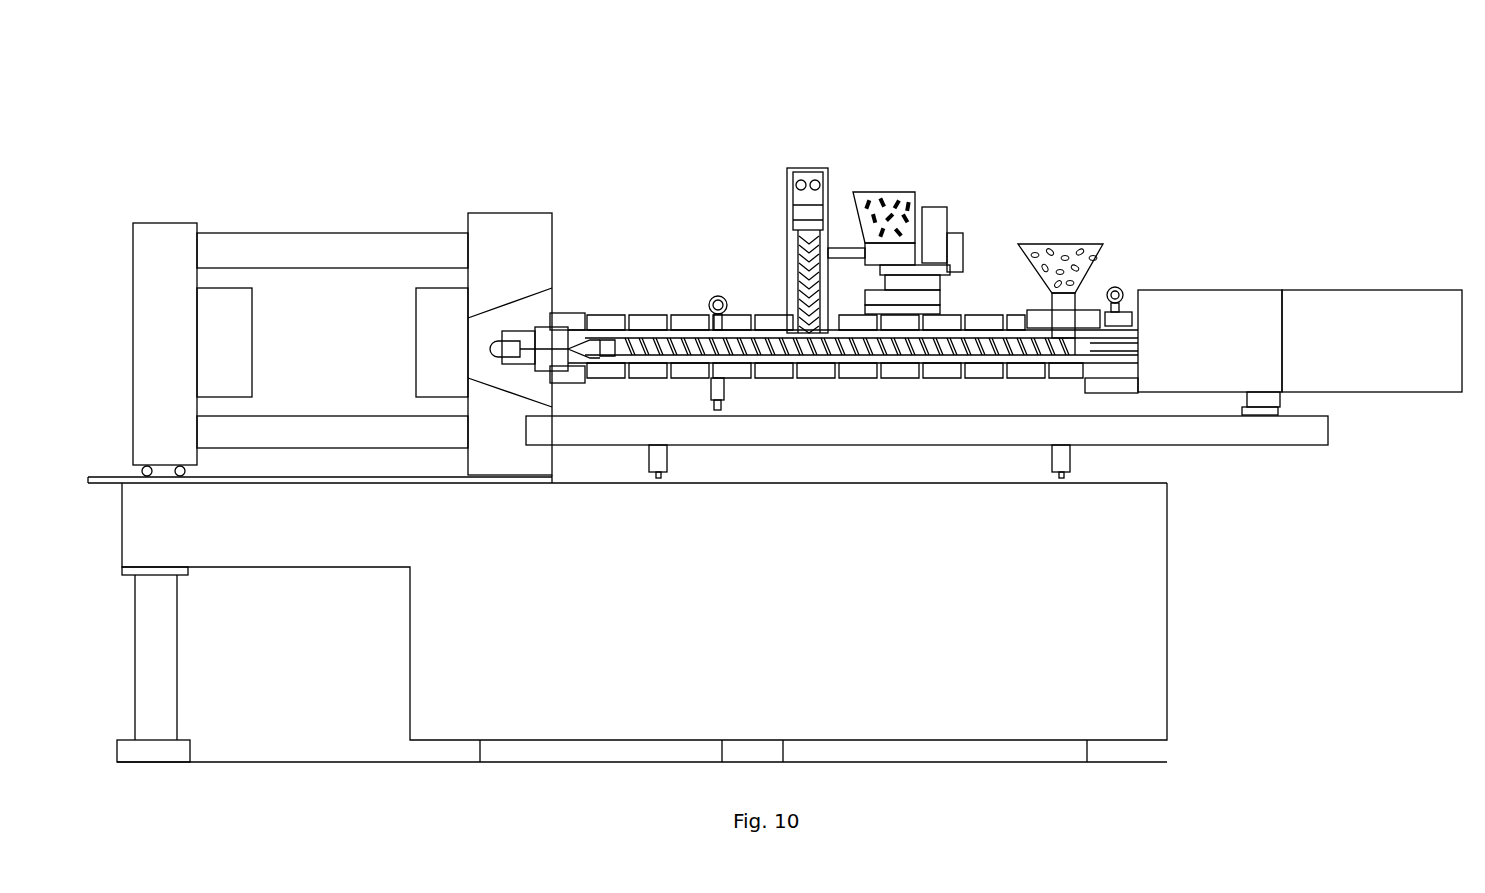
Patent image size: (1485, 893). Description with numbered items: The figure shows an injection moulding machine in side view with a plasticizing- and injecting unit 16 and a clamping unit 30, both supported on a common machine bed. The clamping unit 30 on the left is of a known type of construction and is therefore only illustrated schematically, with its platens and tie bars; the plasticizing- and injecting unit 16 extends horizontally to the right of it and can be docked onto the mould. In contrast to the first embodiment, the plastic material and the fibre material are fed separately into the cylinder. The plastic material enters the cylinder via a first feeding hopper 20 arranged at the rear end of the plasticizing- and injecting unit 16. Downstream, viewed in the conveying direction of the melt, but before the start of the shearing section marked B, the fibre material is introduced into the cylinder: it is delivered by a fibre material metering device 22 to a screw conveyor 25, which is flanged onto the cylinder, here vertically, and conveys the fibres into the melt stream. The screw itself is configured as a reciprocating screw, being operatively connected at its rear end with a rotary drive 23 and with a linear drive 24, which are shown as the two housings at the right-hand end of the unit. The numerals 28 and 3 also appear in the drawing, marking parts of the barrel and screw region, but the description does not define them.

The clamping unit 30 is at (337, 165).
The plasticizing- and injecting unit 16 is at (1008, 256).
The plasticizing barrel 28 is at (647, 338).
The screw 3 is at (942, 358).
The first feeding hopper 20 is at (1095, 265).
The screw conveyor 25 is at (787, 248).
The fibre material metering device 22 is at (935, 233).
The rotary drive 23 is at (1237, 307).
The linear drive 24 is at (1407, 322).